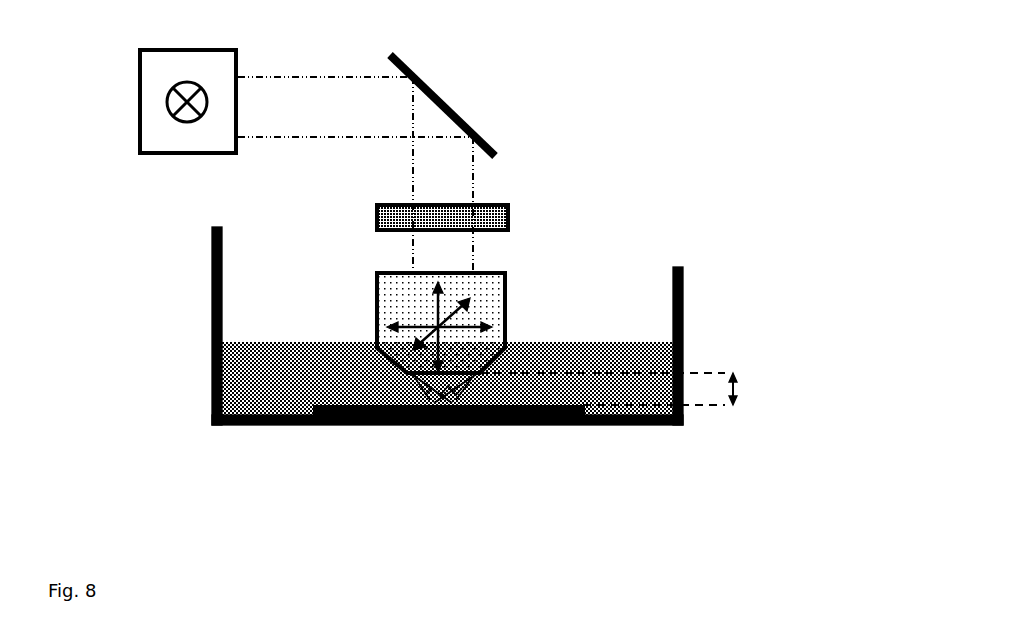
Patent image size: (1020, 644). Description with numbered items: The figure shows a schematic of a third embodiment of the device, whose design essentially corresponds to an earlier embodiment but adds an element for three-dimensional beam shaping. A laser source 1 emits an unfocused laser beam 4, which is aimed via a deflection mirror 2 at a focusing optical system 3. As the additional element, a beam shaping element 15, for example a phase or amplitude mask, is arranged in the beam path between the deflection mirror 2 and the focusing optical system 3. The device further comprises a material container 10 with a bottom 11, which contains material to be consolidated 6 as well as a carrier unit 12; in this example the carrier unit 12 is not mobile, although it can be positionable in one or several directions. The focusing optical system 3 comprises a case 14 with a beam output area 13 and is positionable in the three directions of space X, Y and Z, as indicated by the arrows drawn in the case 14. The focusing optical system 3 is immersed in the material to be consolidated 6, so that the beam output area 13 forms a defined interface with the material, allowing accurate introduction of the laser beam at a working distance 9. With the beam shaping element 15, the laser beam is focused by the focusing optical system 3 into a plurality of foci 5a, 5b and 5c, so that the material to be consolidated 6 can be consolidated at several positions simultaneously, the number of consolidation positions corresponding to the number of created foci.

The laser source 1 is at (157, 132).
The deflection mirror 2 is at (455, 112).
The focusing optical system 3 is at (558, 279).
The unfocused laser beam 4 is at (315, 115).
The focus 5a is at (415, 427).
The focus 5b is at (443, 427).
The focus 5c is at (485, 427).
The material to be consolidated 6 is at (253, 388).
The working distance 9 is at (584, 389).
The material container 10 is at (384, 390).
The bottom 11 is at (288, 427).
The carrier unit 12 is at (447, 390).
The beam output area 13 is at (470, 427).
The case 14 is at (505, 313).
The beam shaping element 15 is at (508, 215).